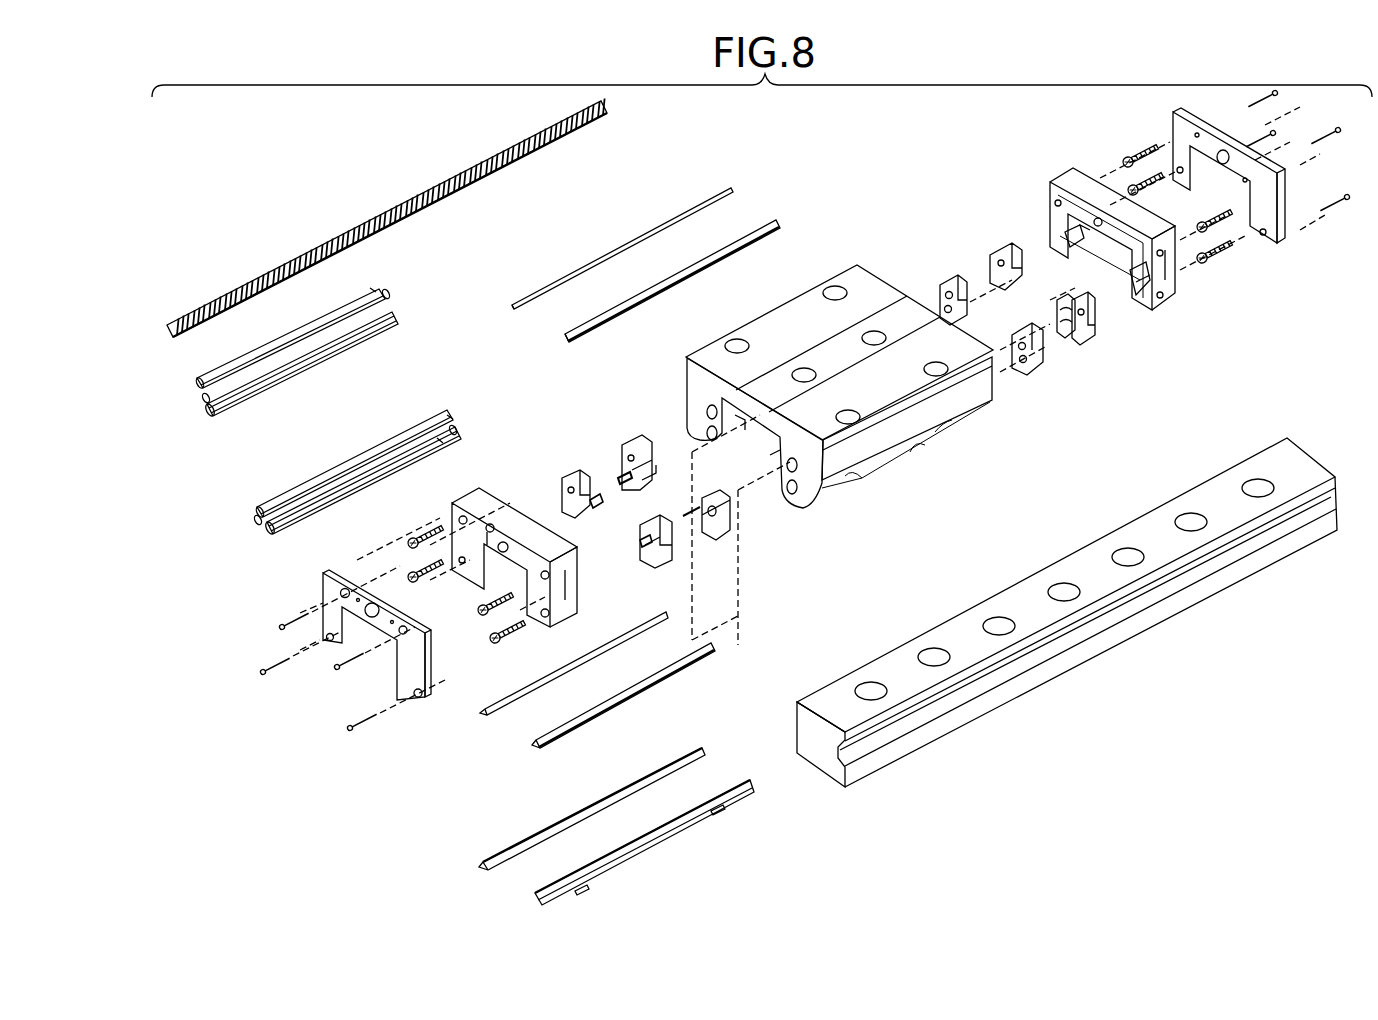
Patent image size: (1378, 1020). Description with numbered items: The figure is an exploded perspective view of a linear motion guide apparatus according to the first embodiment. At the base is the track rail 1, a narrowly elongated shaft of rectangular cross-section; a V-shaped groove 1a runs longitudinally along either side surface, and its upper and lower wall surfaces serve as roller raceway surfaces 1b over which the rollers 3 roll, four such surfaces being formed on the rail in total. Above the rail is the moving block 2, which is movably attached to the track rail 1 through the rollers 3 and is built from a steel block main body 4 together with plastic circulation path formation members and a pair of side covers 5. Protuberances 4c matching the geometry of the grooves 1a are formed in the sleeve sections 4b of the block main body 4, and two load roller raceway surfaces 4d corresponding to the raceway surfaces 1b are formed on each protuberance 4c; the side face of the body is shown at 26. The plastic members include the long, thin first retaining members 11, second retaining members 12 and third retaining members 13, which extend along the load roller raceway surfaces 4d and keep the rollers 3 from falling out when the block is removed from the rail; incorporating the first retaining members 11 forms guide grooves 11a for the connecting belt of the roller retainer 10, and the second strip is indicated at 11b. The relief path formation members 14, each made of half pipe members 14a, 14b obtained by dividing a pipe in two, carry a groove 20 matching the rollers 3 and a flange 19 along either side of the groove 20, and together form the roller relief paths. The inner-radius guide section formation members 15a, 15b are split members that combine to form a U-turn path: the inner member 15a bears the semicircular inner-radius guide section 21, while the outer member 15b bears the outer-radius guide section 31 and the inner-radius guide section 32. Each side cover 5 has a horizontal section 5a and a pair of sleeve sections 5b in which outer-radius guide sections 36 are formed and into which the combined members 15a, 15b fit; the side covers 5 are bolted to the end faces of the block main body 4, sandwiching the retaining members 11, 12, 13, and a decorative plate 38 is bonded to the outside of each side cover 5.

The track rail 1 is at (1028, 632).
The groove 1a is at (973, 675).
The roller raceway surface 1b is at (897, 740).
The moving block 2 is at (810, 434).
The roller 3 is at (387, 218).
The block main body 4 is at (810, 394).
The sleeve section 4b is at (744, 459).
The protuberance 4c is at (738, 500).
The load roller raceway surface 4d is at (720, 440).
The side cover 5 is at (825, 389).
The horizontal section 5a is at (510, 520).
The sleeve section 5b is at (565, 613).
The roller retainer 10 is at (452, 196).
The first retaining member 11 is at (623, 270).
The guide groove 11a is at (567, 342).
The lower guide strip 11b is at (585, 322).
The second retaining member 12 is at (523, 730).
The third retaining member 13 is at (572, 818).
The relief path formation member 14 is at (344, 398).
The half pipe member 14a is at (250, 347).
The half pipe member 14b is at (325, 353).
The inner-radius guide section formation member 15a is at (625, 447).
The inner-radius guide section formation member 15b is at (573, 473).
The flange 19 is at (373, 290).
The groove 20 is at (390, 293).
The inner-radius guide section 21 is at (620, 482).
The slider side face 26 is at (902, 433).
The outer-radius guide section 31 is at (1063, 337).
The inner-radius guide section 32 is at (642, 535).
The outer-radius guide section 36 is at (1080, 253).
The decorative plate 38 is at (407, 690).